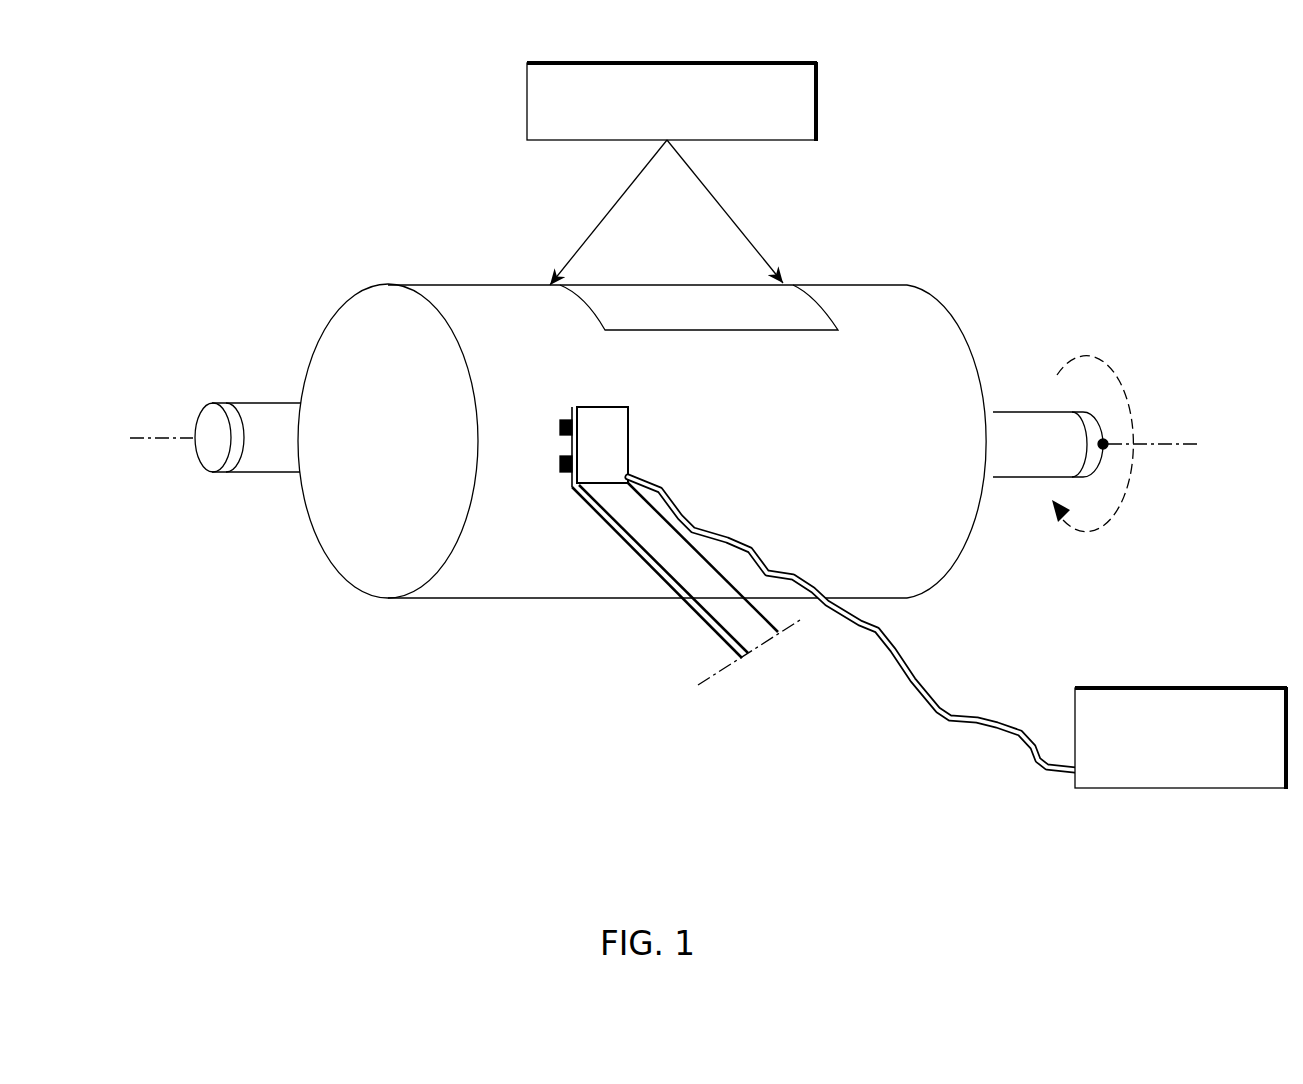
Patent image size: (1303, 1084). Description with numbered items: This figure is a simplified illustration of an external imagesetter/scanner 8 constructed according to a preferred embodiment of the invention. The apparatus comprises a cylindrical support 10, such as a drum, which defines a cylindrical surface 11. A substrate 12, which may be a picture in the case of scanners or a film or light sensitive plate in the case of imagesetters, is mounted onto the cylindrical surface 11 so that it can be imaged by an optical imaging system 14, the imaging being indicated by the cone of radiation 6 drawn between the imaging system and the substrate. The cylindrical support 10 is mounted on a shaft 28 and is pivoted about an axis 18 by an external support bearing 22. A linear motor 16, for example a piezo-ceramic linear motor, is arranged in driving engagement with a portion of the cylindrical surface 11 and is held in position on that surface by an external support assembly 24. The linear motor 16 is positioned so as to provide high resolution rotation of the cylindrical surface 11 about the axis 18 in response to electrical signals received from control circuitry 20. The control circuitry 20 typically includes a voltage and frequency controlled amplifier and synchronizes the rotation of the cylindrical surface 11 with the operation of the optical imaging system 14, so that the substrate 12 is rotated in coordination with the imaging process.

The cone of radiation 6 is at (598, 220).
The external imagesetter/scanner 8 is at (970, 220).
The cylindrical support 10 is at (303, 583).
The cylindrical surface 11 is at (957, 350).
The substrate 12 is at (818, 297).
The optical imaging system 14 is at (822, 98).
The linear motor 16 is at (607, 428).
The axis 18 is at (183, 437).
The control circuitry 20 is at (1200, 688).
The external support bearing 22 is at (213, 437).
The external support assembly 24 is at (690, 610).
The shaft 28 is at (275, 470).